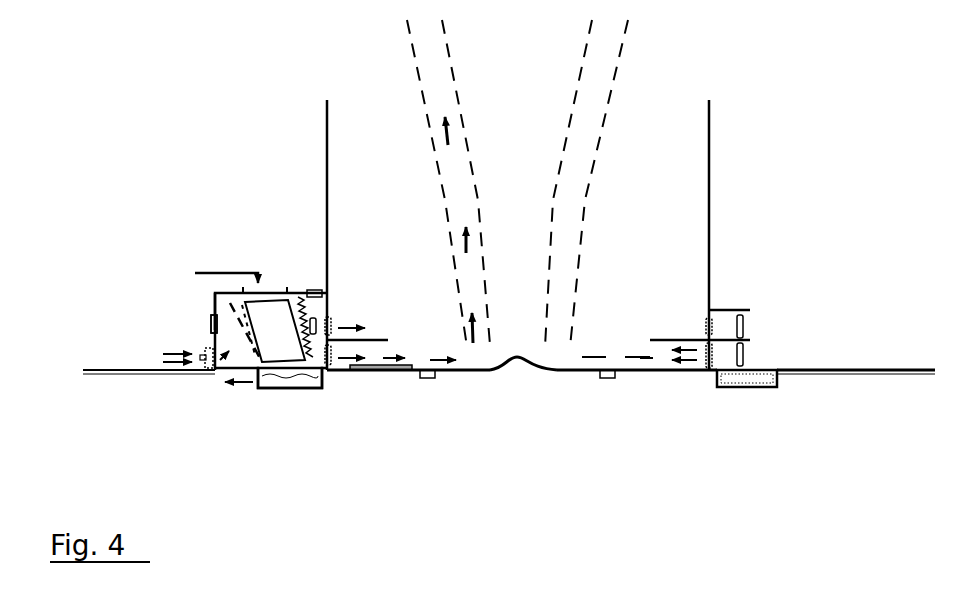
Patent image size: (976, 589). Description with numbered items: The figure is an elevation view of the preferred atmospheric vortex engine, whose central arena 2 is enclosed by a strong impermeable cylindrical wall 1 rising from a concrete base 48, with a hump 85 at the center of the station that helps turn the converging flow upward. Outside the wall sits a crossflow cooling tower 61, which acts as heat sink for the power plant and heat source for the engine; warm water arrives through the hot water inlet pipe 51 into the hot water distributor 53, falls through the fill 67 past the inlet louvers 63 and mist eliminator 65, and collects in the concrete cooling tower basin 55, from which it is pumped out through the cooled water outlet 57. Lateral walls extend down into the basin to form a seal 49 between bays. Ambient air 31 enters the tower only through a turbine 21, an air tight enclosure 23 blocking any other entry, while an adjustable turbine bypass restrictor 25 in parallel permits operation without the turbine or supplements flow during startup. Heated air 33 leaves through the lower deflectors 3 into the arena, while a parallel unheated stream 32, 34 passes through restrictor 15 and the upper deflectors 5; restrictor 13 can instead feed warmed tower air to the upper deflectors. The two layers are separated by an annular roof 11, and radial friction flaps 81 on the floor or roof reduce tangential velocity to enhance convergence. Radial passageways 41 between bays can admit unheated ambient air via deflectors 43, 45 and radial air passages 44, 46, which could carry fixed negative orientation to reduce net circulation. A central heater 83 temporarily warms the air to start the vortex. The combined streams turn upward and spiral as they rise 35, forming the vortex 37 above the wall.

The cylindrical wall 1 is at (320, 168).
The arena 2 is at (610, 306).
The lower deflectors 3 is at (340, 352).
The upper deflectors 5 is at (358, 320).
The annular roof 11 is at (378, 333).
The restrictor 13 is at (333, 295).
The restrictor 15 is at (331, 282).
The turbine 21 is at (200, 350).
The air tight enclosure 23 is at (208, 305).
The turbine bypass restrictor 25 is at (207, 323).
The ambient air 31 is at (155, 355).
The parallel stream of air 32 is at (313, 283).
The heated air 33 is at (360, 373).
The parallel stream of air 34 is at (375, 318).
The rising air 35 is at (440, 133).
The vortex 37 is at (410, 58).
The radial passageways 41 is at (757, 305).
The deflector 43 is at (702, 362).
The radial air passage 44 is at (750, 352).
The deflector 45 is at (703, 322).
The radial air passage 46 is at (750, 326).
The concrete base 48 is at (910, 373).
The seal 49 is at (752, 380).
The hot water inlet pipe 51 is at (203, 268).
The hot water distributor 53 is at (262, 282).
The cooling tower basin 55 is at (280, 382).
The cooled water outlet 57 is at (228, 390).
The crossflow cooling tower 61 is at (224, 254).
The inlet louvers 63 is at (212, 290).
The mist eliminator 65 is at (295, 292).
The fill 67 is at (292, 352).
The radial friction flaps 81 is at (390, 373).
The heater 83 is at (429, 382).
The hump 85 is at (517, 362).